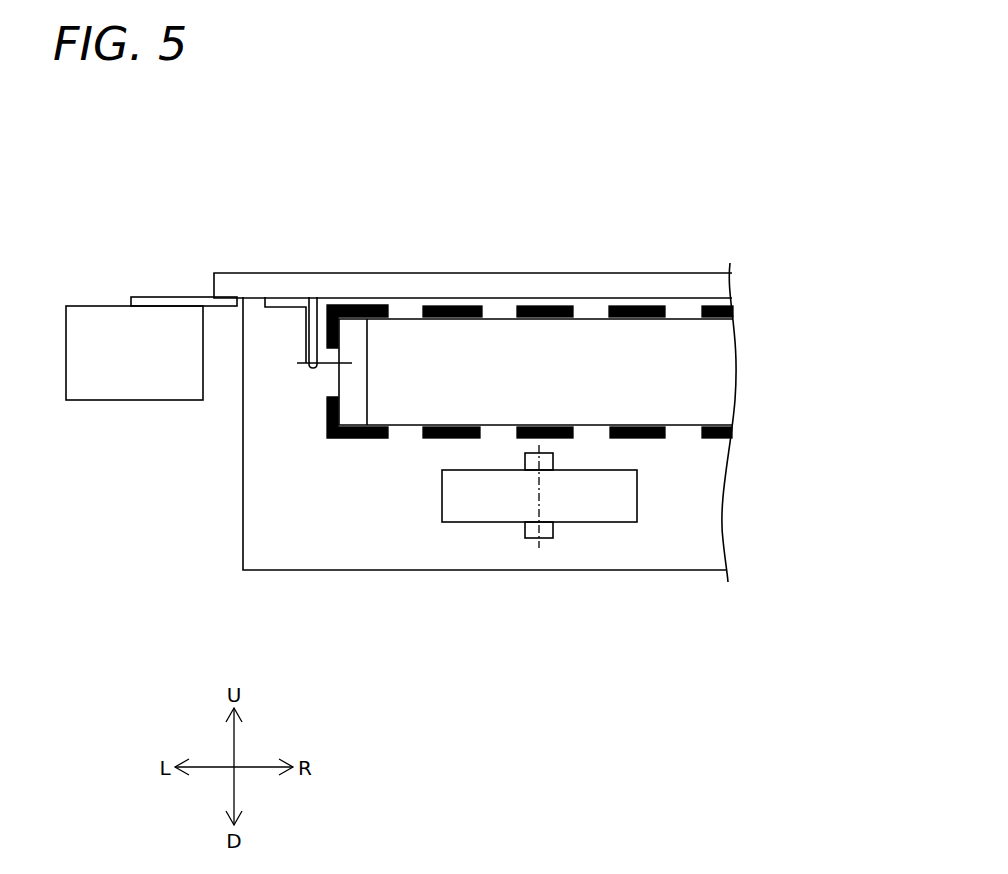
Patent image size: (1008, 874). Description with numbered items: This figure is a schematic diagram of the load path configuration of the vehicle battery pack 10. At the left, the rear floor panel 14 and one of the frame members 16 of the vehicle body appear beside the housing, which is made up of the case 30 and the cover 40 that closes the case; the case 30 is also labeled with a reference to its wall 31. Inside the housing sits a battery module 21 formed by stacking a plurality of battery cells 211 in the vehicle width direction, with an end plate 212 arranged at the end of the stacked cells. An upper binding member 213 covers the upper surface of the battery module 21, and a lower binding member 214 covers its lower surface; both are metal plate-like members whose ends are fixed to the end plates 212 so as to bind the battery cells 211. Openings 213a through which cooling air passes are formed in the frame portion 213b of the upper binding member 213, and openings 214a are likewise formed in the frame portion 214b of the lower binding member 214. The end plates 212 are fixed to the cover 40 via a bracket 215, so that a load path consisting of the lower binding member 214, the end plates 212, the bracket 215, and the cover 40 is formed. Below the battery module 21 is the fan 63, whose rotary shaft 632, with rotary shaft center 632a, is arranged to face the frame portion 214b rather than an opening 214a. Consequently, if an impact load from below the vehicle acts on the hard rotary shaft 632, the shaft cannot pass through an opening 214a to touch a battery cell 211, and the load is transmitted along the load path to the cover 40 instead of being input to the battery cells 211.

The battery pack 10 is at (716, 237).
The rear floor panel 14 is at (172, 297).
The frame member 16 is at (97, 305).
The battery module 21 is at (607, 372).
The battery cell 211 is at (680, 375).
The end plate 212 is at (338, 380).
The upper binding member 213 is at (359, 305).
The opening 213a is at (423, 310).
The frame portion 213b is at (548, 307).
The lower binding member 214 is at (347, 440).
The opening 214a is at (483, 437).
The frame portion 214b is at (568, 439).
The bracket 215 is at (308, 334).
The case 30 is at (485, 467).
The side plate 31 is at (658, 571).
The cover 40 is at (683, 274).
The fan 63 is at (442, 502).
The rotary shaft 632 is at (525, 458).
The rotary shaft center 632a is at (539, 500).